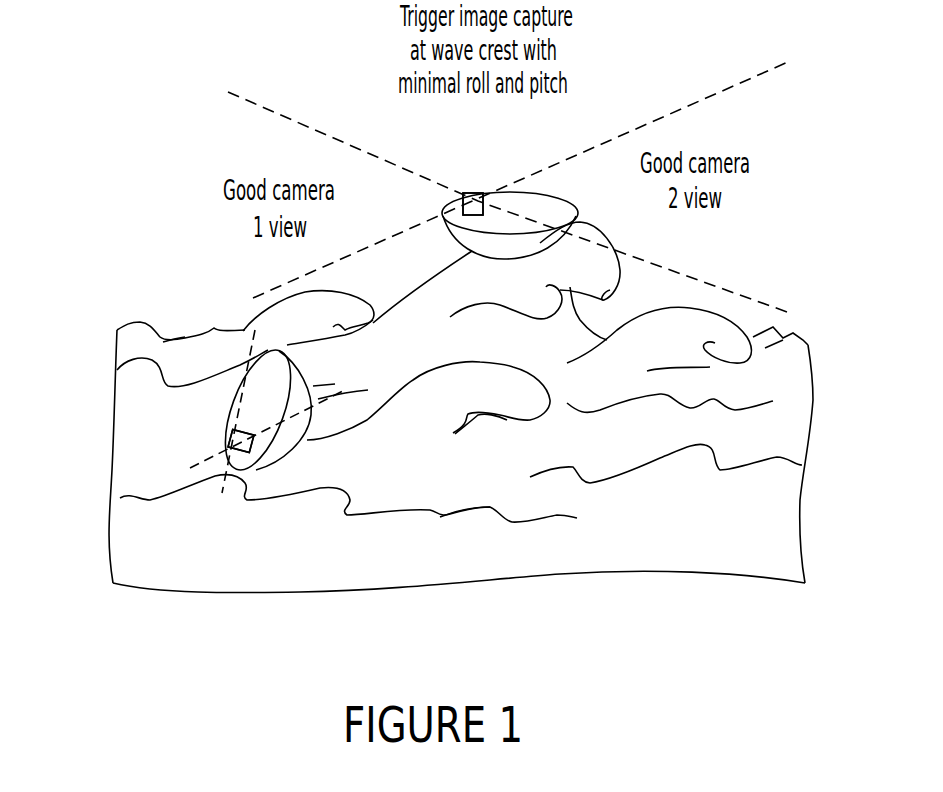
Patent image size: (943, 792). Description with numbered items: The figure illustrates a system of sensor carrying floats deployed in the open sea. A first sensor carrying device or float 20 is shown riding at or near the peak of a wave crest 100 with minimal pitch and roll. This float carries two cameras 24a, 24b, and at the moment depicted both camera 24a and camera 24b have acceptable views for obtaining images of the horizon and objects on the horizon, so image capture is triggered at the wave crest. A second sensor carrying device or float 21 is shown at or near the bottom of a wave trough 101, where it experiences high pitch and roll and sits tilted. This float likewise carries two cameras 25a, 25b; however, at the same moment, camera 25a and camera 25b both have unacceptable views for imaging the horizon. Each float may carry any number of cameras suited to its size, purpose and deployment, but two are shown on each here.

The sensor carrying device or float 20 is at (555, 193).
The sensor carrying device or float 21 is at (248, 475).
The camera 24a is at (463, 193).
The camera 24b is at (482, 193).
The camera 25a is at (233, 443).
The camera 25b is at (235, 435).
The wave crest 100 is at (620, 280).
The wave trough 101 is at (282, 465).